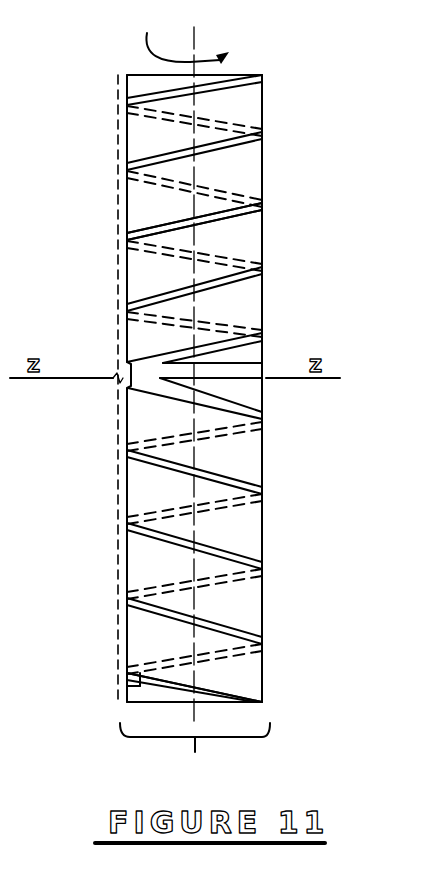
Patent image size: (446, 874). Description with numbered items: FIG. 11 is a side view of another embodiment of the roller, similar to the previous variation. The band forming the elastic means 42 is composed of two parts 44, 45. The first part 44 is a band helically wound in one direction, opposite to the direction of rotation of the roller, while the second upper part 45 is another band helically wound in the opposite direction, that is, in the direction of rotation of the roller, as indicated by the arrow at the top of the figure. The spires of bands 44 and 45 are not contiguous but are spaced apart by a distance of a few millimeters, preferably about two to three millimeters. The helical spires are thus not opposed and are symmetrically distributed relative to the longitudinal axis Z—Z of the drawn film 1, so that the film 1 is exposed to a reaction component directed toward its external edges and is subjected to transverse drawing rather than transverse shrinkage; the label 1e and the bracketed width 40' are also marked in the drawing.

The drawn film 1 is at (119, 417).
The helical element end portion 1e is at (218, 621).
The elastic means 42 is at (268, 356).
The first part 44 is at (268, 683).
The second upper part 45 is at (265, 200).
The width dimension 40' is at (195, 755).